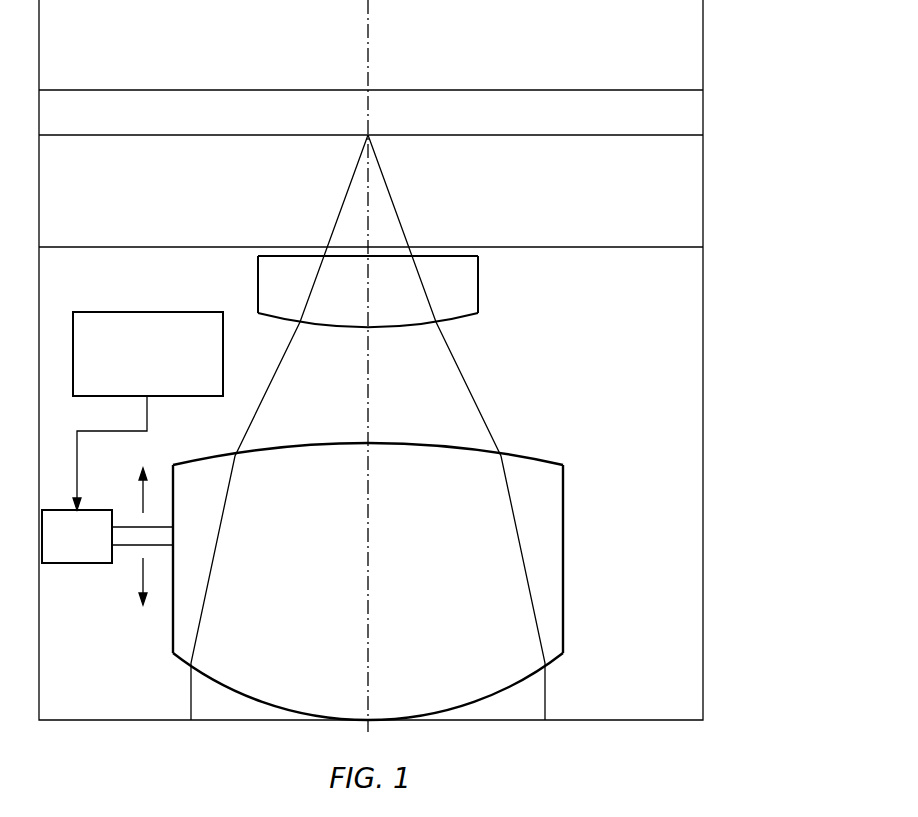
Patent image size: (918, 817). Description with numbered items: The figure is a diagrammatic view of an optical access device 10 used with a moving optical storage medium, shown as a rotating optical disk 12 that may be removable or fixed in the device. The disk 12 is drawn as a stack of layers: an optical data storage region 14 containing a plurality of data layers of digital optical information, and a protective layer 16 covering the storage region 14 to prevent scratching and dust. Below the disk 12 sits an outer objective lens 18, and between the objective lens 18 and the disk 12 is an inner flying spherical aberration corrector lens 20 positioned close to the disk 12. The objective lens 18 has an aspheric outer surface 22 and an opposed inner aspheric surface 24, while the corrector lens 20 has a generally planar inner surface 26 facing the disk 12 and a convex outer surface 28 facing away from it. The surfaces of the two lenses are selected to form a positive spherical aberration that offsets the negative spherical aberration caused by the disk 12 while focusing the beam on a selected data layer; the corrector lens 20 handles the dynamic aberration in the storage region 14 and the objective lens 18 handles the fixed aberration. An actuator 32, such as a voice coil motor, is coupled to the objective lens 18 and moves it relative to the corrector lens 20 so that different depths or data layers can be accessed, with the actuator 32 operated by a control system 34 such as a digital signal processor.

The optical access device 10 is at (520, 448).
The optical disk 12 is at (703, 35).
The optical data storage region 14 is at (703, 110).
The protective layer 16 is at (703, 191).
The objective lens 18 is at (389, 609).
The flying spherical aberration corrector lens 20 is at (478, 286).
The aspheric outer surface 22 is at (530, 672).
The inner aspheric surface 24 is at (540, 460).
The planar inner surface 26 is at (443, 255).
The convex outer surface 28 is at (457, 319).
The actuator 32 is at (75, 563).
The control system 34 is at (135, 312).